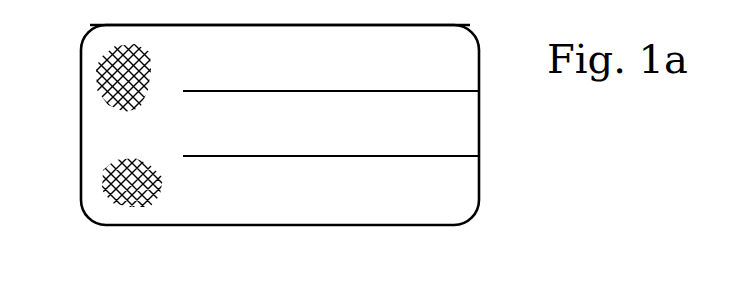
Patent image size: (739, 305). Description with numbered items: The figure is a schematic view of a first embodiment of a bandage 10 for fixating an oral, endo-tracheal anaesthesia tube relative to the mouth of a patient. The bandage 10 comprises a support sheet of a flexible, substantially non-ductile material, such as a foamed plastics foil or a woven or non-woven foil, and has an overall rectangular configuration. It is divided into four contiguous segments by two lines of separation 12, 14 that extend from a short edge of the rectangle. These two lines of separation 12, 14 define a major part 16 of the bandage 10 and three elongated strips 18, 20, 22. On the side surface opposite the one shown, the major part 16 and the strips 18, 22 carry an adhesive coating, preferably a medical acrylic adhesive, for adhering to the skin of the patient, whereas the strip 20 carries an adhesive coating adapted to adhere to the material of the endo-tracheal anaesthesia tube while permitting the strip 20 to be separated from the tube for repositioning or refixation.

The bandage 10 is at (485, 225).
The line of separation 12 is at (442, 91).
The line of separation 14 is at (398, 155).
The major part 16 is at (108, 124).
The elongated strip 18 is at (443, 52).
The elongated strip 20 is at (263, 138).
The elongated strip 22 is at (313, 197).